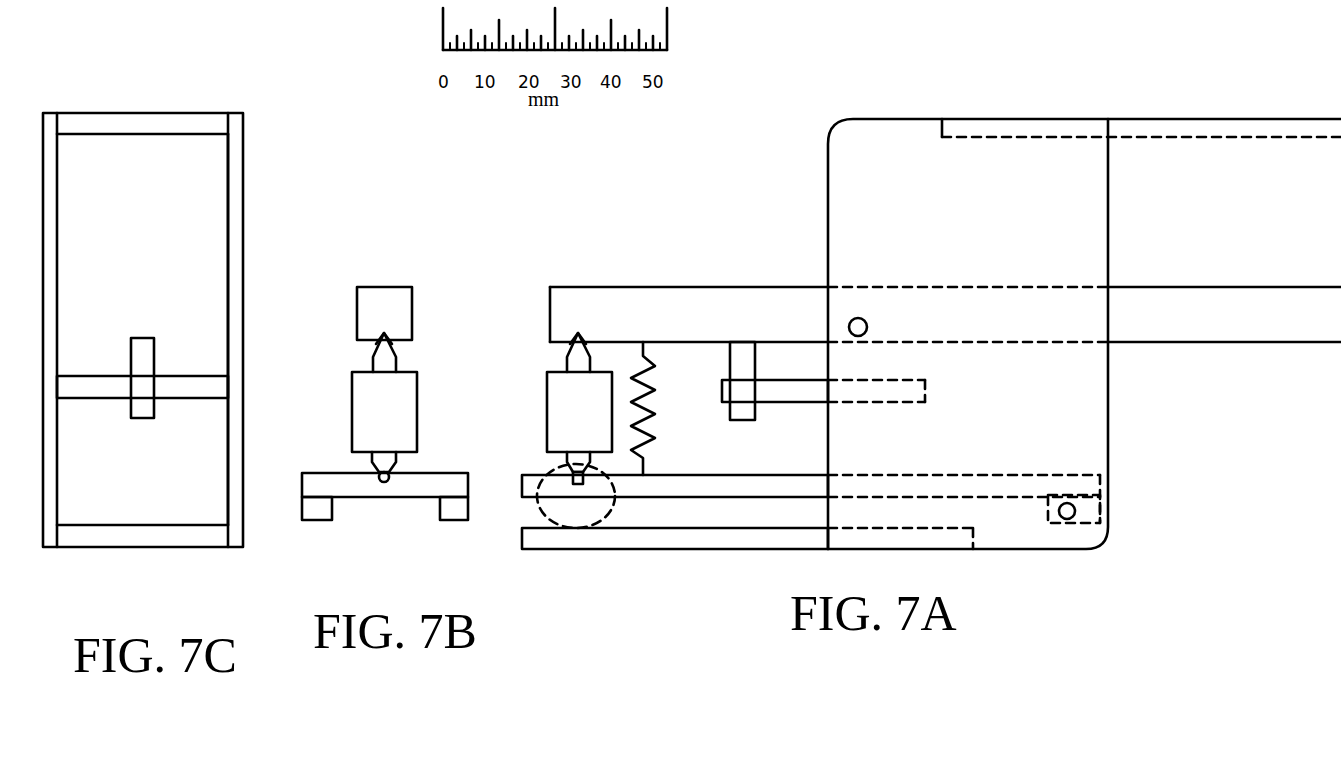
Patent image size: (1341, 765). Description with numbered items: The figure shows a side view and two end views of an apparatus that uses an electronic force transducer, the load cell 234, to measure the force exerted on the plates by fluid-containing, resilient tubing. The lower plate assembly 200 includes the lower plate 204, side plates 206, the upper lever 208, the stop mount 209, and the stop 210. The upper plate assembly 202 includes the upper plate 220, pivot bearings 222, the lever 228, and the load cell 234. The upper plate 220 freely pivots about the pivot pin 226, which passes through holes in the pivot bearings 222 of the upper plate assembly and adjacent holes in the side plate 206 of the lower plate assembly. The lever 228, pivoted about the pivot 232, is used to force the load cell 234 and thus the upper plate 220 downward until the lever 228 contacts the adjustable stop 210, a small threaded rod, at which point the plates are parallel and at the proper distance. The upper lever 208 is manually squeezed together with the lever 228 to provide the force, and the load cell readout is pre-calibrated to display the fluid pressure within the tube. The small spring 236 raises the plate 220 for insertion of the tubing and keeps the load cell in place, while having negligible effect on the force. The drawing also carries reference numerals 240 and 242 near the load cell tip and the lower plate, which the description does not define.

In FIG. 7C, the lower plate assembly 200 is at (266, 171).
In FIG. 7B, the upper plate assembly 202 is at (320, 394).
In FIG. 7C, the lower plate 204 is at (150, 549).
In FIG. 7A, the lower plate 204 is at (622, 551).
In FIG. 7C, the side plate 206 is at (244, 229).
In FIG. 7C, the upper lever 208 is at (118, 112).
In FIG. 7A, the upper lever 208 is at (1150, 119).
In FIG. 7C, the stop mount 209 is at (176, 400).
In FIG. 7A, the stop mount 209 is at (792, 375).
In FIG. 7C, the stop 210 is at (144, 338).
In FIG. 7A, the stop 210 is at (721, 368).
In FIG. 7B, the upper plate 220 is at (402, 497).
In FIG. 7A, the upper plate 220 is at (695, 474).
In FIG. 7B, the pivot bearings 222 is at (310, 520).
In FIG. 7A, the pivot pin 226 is at (1067, 519).
In FIG. 7B, the lever 228 is at (386, 287).
In FIG. 7A, the lever 228 is at (1180, 287).
In FIG. 7A, the pivot 232 is at (862, 318).
In FIG. 7B, the load cell 234 is at (418, 410).
In FIG. 7A, the load cell 234 is at (547, 400).
In FIG. 7A, the spring 236 is at (656, 406).
In FIG. 7A, the tip region 240 is at (537, 516).
In FIG. 7A, the dispensing zone 242 is at (614, 506).